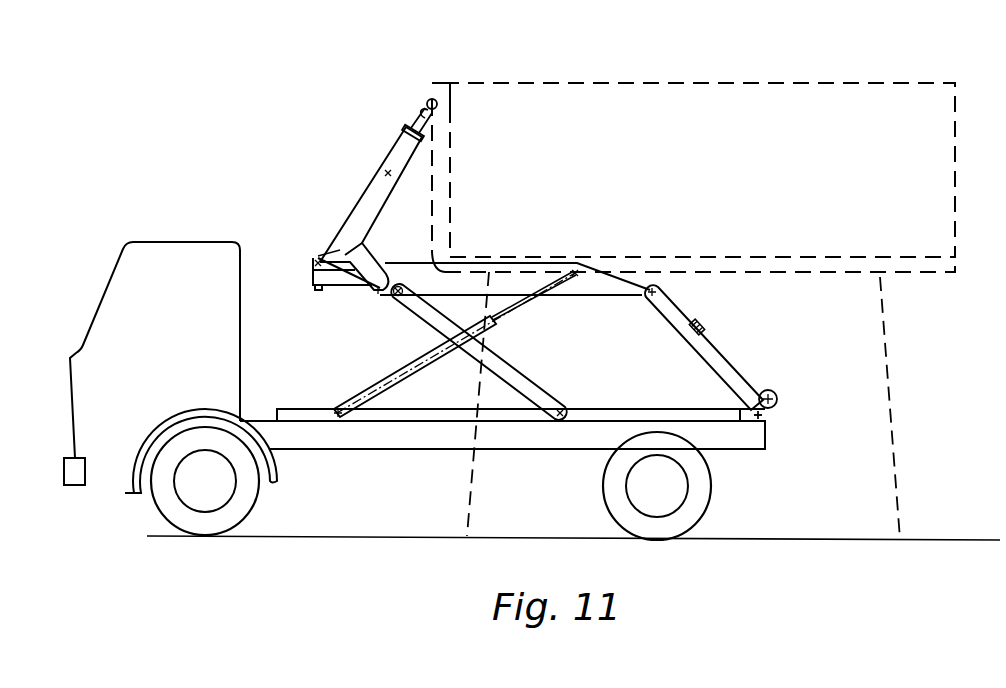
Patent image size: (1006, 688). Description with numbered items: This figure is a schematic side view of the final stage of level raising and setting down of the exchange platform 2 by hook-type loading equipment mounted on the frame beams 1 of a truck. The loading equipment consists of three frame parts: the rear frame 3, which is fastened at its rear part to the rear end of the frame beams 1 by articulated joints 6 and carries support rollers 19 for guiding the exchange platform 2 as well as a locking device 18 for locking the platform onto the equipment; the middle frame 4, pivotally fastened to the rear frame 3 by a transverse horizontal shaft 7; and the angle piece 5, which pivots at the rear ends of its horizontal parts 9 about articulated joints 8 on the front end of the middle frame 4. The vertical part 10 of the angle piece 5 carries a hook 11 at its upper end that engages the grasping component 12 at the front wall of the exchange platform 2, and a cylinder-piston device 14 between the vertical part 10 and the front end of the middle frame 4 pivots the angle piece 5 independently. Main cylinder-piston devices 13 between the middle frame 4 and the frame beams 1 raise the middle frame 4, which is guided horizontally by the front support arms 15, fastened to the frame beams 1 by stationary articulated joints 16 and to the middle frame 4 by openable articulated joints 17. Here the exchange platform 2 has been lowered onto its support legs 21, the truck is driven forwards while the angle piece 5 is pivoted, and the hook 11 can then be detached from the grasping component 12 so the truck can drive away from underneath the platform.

The frame beams 1 is at (440, 449).
The exchange platform 2 is at (688, 191).
The rear frame 3 is at (745, 375).
The middle frame 4 is at (588, 300).
The angle piece 5 is at (358, 190).
The articulated joints 6 is at (765, 418).
The transverse horizontal shaft 7 is at (652, 302).
The articulated joints 8 is at (378, 294).
The horizontal parts 9 is at (353, 262).
The vertical part 10 is at (367, 226).
The hook 11 is at (413, 126).
The grasping component 12 is at (430, 98).
The main cylinder-piston devices 13 is at (430, 360).
The cylinder-piston device 14 is at (345, 218).
The front support arms 15 is at (500, 365).
The articulated joints 16 is at (562, 410).
The articulated joints 17 is at (398, 296).
The locking device 18 is at (705, 326).
The support rollers 19 is at (777, 399).
The support legs 21 is at (470, 512).